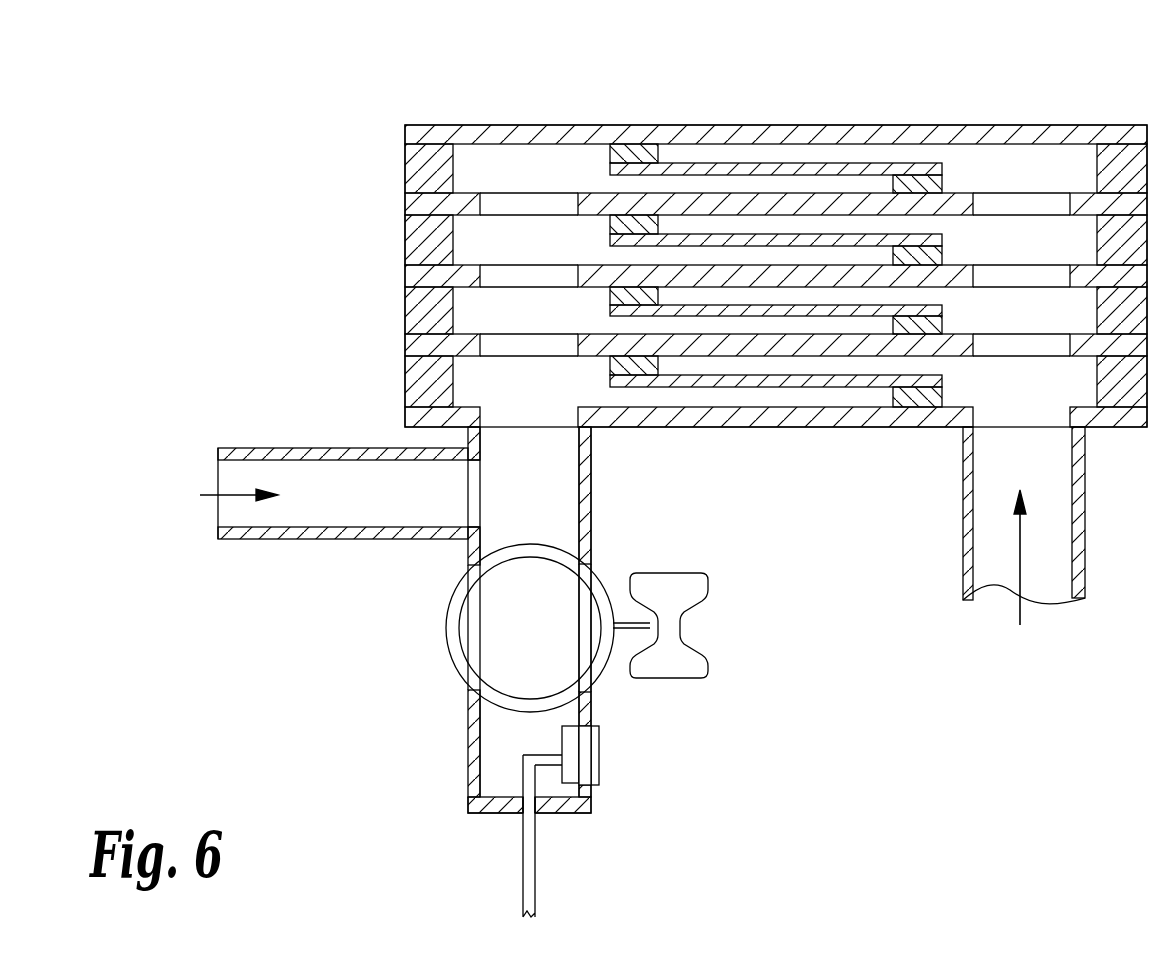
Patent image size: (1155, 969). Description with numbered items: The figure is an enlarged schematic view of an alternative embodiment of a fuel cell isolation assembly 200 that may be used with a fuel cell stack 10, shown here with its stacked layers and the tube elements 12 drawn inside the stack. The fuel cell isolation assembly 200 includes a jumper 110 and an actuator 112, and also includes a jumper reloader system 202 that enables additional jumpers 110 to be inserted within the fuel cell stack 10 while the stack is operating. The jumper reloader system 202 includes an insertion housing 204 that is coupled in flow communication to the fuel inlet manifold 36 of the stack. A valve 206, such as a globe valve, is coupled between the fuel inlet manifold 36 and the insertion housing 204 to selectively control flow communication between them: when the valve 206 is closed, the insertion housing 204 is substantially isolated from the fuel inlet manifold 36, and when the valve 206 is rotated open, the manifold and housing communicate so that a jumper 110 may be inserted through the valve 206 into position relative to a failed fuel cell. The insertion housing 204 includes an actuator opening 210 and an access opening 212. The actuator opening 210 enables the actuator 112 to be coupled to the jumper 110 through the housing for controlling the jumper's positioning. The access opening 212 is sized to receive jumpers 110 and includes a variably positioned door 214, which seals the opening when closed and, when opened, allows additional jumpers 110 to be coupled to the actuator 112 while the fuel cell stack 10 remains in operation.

The fuel cell stack 10 is at (345, 108).
The tubes 12 is at (942, 250).
The fuel inlet manifold 36 is at (378, 509).
The fuel cell isolation assembly 200 is at (430, 690).
The jumper reloader system 202 is at (445, 772).
The insertion housing 204 is at (591, 810).
The valve 206 is at (598, 583).
The actuator opening 210 is at (537, 813).
The access opening 212 is at (600, 762).
The door 214 is at (599, 727).
The jumper 110 is at (600, 745).
The actuator 112 is at (523, 833).